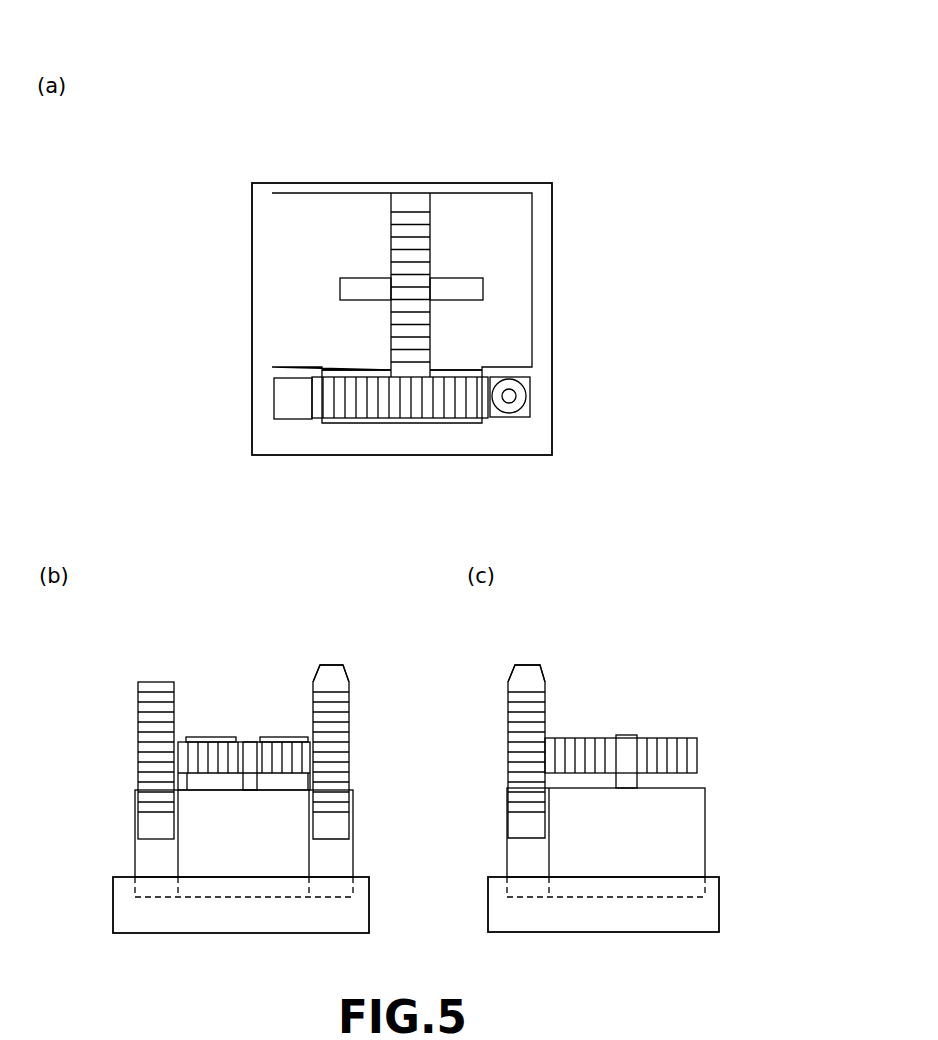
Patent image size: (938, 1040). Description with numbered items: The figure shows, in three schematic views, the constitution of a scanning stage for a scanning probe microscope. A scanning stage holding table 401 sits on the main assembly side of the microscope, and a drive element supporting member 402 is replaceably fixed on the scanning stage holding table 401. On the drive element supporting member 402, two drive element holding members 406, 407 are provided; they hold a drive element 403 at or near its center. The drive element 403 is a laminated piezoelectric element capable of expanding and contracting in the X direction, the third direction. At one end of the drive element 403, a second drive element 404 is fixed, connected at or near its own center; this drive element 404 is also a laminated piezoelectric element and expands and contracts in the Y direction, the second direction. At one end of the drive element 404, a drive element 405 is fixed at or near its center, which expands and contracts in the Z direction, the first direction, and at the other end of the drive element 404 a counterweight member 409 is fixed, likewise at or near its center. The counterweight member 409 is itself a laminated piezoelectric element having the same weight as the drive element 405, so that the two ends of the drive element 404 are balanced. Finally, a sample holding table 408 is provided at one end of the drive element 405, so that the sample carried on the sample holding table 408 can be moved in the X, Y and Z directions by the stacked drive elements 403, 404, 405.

The scanning stage holding table 401 is at (250, 248).
The drive element supporting member 402 is at (275, 327).
The drive element 403 is at (412, 318).
The drive element 404 is at (443, 397).
The drive element 405 is at (527, 371).
The drive element holding member 406 is at (360, 288).
The drive element holding member 407 is at (462, 288).
The sample holding table 408 is at (517, 394).
The counterweight member 409 is at (283, 401).